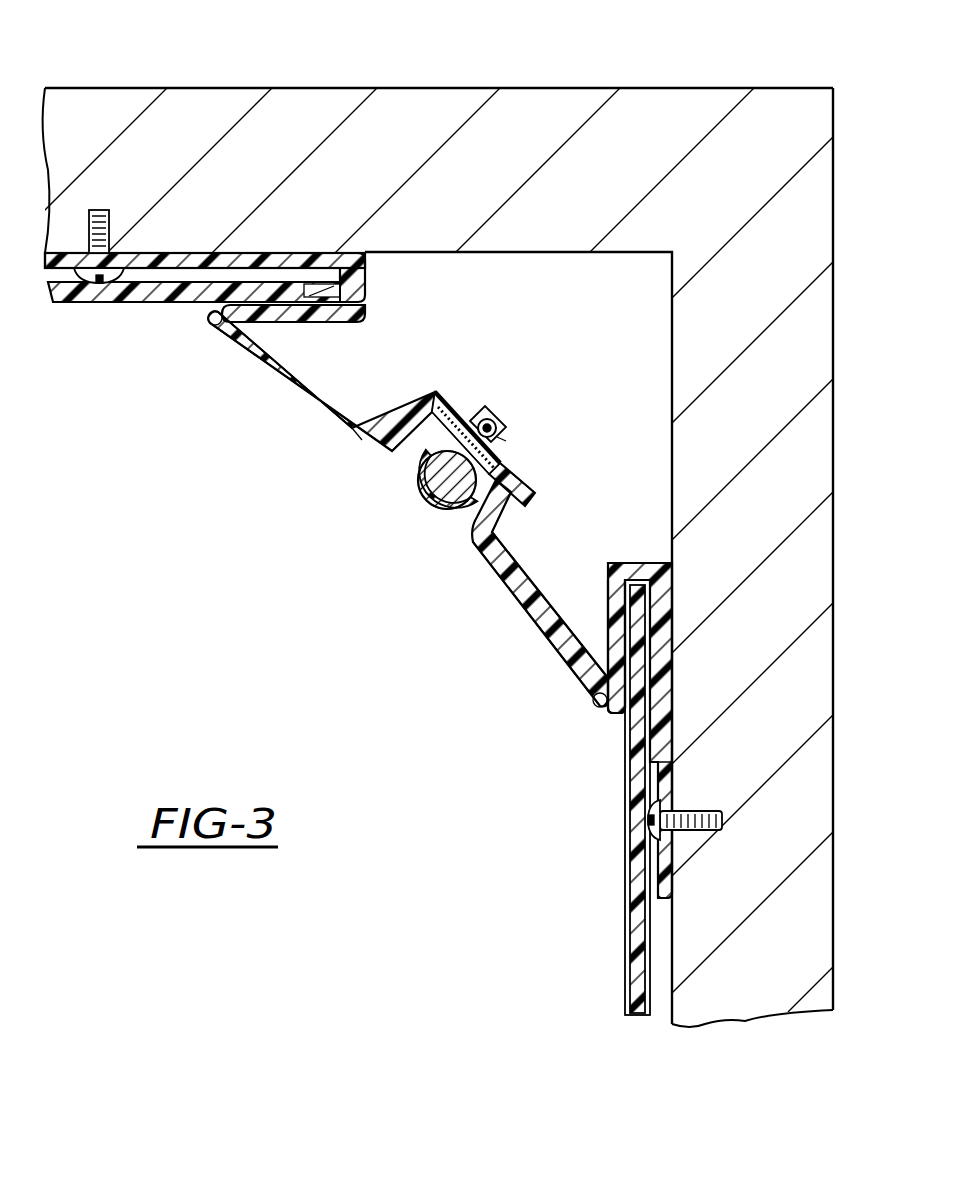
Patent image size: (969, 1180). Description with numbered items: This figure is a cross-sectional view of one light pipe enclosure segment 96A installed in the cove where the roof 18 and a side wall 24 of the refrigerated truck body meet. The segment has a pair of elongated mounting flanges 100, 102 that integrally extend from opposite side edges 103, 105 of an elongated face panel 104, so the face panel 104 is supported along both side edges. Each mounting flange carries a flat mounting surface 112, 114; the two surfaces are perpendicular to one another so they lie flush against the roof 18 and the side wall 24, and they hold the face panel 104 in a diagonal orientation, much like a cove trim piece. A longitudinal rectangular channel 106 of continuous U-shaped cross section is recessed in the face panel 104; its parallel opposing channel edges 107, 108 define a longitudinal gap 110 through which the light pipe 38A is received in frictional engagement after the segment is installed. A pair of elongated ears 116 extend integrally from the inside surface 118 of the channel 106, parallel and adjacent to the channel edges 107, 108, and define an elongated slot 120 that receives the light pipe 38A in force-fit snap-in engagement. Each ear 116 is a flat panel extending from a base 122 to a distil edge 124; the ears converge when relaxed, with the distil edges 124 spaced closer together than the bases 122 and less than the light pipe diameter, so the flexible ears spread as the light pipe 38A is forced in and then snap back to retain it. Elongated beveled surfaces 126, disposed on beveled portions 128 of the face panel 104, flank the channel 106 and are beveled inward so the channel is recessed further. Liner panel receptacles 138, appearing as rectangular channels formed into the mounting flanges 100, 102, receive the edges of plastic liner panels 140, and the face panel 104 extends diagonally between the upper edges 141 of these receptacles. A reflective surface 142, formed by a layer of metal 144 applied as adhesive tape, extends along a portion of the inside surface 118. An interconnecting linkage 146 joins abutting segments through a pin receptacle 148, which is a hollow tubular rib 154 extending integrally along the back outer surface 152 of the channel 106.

The roof 18 is at (421, 112).
The sidewall 24 is at (820, 426).
The light pipe 38A is at (423, 540).
The light pipe enclosure segment 96A is at (583, 703).
The mounting flange 100 is at (200, 258).
The mounting flange 102 is at (648, 736).
The side edge 103 is at (212, 326).
The face panel 104 is at (288, 410).
The side edge 105 is at (607, 716).
The channel 106 is at (466, 485).
The channel edge 107 is at (360, 452).
The channel edge 108 is at (480, 554).
The longitudinal gap 110 is at (390, 462).
The mounting surface 112 is at (283, 258).
The mounting surface 114 is at (665, 572).
The ear 116 is at (393, 448).
The inside surface 118 is at (525, 502).
The slot 120 is at (407, 518).
The base 122 is at (420, 425).
The distil edge 124 is at (404, 490).
The beveled surface 126 is at (305, 418).
The beveled portion 128 is at (270, 362).
The liner panel receptacle 138 is at (390, 252).
The liner panel 140 is at (313, 290).
The upper edge 141 is at (220, 308).
The reflective surface 142 is at (466, 422).
The layer of metal 144 is at (500, 465).
The interconnecting linkage 146 is at (536, 430).
The pin receptacle 148 is at (497, 426).
The back outer surface 152 is at (528, 482).
The hollow tubular rib 154 is at (518, 427).